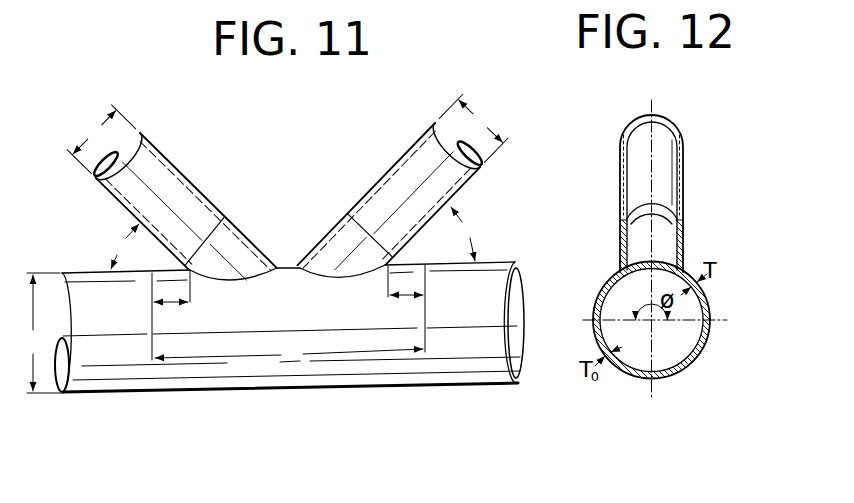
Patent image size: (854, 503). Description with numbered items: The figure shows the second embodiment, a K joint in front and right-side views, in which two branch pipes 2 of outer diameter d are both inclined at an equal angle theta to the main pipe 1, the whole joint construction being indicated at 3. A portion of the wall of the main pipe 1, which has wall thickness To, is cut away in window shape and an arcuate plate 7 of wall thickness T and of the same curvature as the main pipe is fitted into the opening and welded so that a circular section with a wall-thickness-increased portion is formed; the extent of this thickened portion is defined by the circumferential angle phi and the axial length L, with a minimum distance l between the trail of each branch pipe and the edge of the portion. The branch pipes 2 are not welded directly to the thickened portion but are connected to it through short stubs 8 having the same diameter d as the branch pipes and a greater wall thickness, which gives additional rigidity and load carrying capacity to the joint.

In FIG. 11, the main pipe 1 is at (288, 391).
In FIG. 12, the main pipe 1 is at (641, 380).
In FIG. 11, the branch pipe 2 is at (190, 181).
In FIG. 12, the branch pipe 2 is at (620, 170).
In FIG. 11, the pipe joint 3 is at (342, 161).
In FIG. 11, the arcuate plate 7 is at (413, 265).
In FIG. 12, the arcuate plate 7 is at (601, 296).
In FIG. 11, the short stub 8 is at (246, 229).
In FIG. 12, the short stub 8 is at (621, 233).